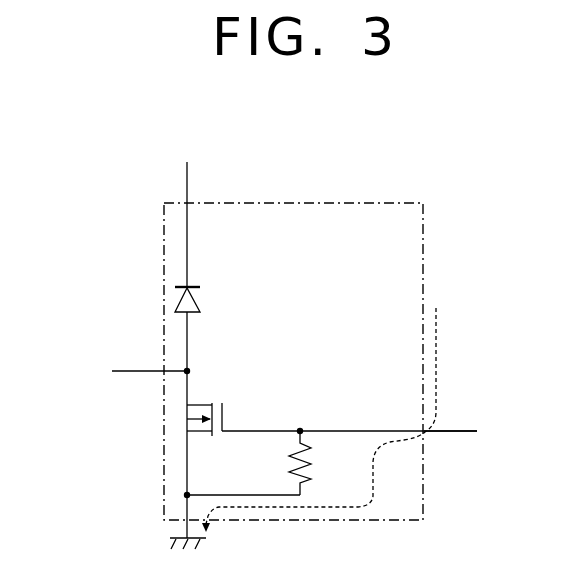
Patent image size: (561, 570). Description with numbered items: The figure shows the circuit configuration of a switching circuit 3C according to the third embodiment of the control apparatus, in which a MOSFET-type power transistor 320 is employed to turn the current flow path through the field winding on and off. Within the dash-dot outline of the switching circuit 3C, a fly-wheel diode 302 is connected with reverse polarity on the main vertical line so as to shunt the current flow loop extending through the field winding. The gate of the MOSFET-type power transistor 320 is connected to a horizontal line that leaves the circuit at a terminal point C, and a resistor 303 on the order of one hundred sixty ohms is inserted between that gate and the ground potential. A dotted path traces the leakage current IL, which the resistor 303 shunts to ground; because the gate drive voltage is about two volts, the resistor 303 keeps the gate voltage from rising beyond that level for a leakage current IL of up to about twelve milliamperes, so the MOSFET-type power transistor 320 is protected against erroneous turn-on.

The switching circuit 3C is at (306, 201).
The fly-wheel diode 302 is at (207, 300).
The MOSFET-type power transistor 320 is at (222, 388).
The resistor 303 is at (312, 463).
The leakage current IL is at (332, 419).
The terminal C is at (443, 433).